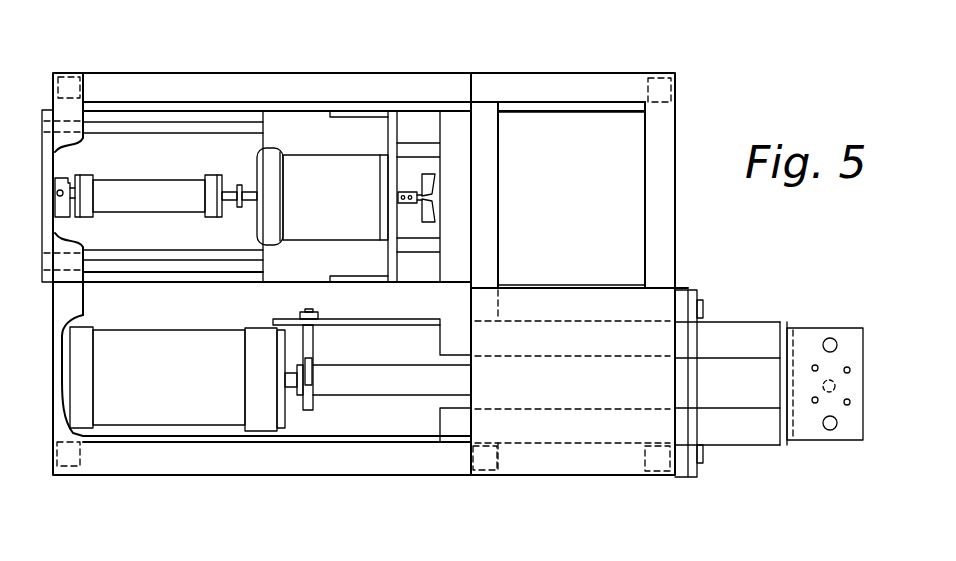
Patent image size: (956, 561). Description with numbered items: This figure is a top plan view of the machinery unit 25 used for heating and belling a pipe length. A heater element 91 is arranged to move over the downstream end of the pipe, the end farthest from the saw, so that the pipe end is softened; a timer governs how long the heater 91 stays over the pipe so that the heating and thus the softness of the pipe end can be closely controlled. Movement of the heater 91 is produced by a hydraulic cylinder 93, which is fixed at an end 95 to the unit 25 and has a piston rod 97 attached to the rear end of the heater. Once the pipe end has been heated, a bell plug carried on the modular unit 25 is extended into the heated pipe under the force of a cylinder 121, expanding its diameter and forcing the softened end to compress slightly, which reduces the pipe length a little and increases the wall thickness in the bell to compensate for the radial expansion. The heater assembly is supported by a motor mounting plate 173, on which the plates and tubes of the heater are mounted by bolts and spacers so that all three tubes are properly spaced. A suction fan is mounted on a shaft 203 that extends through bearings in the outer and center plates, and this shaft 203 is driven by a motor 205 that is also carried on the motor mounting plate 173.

The modular unit 25 is at (347, 427).
The heater element 91 is at (578, 133).
The hydraulic cylinder 93 is at (168, 160).
The end 95 is at (53, 212).
The piston rod 97 is at (227, 208).
The cylinder 121 is at (175, 407).
The motor mounting plate 173 is at (392, 263).
The shaft 203 is at (415, 207).
The motor 205 is at (297, 173).